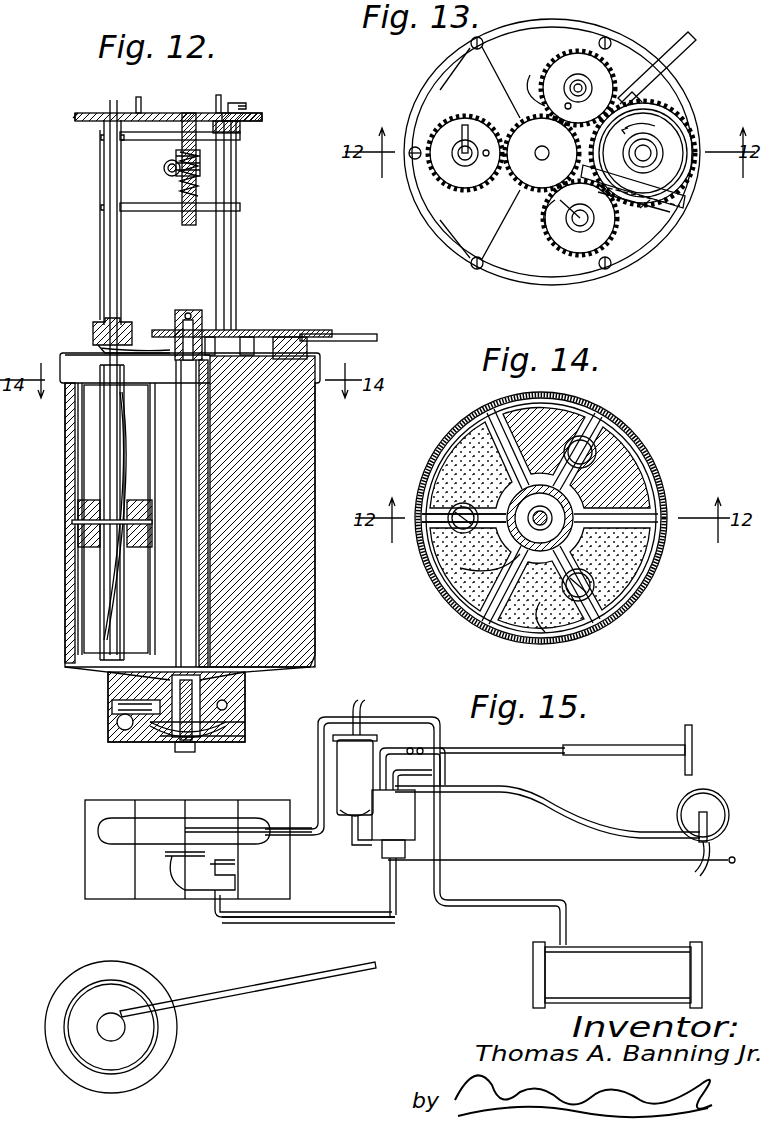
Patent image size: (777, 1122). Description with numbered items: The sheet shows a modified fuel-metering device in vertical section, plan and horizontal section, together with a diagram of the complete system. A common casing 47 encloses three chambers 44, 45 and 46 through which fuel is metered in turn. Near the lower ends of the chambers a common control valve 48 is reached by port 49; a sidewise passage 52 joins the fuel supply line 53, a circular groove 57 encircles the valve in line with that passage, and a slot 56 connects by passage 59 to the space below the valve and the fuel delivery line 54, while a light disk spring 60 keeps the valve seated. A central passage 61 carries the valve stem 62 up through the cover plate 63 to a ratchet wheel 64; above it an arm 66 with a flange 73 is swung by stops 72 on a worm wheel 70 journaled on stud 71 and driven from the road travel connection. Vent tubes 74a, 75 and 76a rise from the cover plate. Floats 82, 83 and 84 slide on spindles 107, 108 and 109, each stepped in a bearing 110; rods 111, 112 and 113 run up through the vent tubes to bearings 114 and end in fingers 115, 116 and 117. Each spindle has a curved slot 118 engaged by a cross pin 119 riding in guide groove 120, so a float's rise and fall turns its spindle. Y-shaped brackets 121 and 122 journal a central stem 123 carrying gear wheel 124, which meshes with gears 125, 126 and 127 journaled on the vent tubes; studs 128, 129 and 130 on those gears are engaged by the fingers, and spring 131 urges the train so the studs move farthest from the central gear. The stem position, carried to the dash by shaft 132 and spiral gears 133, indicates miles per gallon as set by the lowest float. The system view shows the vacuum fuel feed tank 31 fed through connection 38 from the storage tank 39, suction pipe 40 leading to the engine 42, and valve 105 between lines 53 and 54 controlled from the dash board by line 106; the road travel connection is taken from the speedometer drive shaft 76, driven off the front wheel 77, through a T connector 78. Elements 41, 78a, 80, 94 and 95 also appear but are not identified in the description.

In FIG. 15, the vacuum fuel feed tank 31 is at (355, 775).
In FIG. 15, the connection 38 is at (398, 748).
In FIG. 15, the storage tank 39 is at (617, 975).
In FIG. 15, the pipe 40 is at (312, 753).
In FIG. 15, the tube 41 is at (158, 818).
In FIG. 15, the engine 42 is at (92, 864).
In FIG. 12, the chamber 44 is at (90, 595).
In FIG. 14, the chamber 44 is at (470, 603).
In FIG. 14, the chamber 45 is at (500, 418).
In FIG. 14, the chamber 46 is at (490, 620).
In FIG. 12, the common casing 47 is at (320, 473).
In FIG. 14, the common casing 47 is at (590, 390).
In FIG. 15, the common casing 47 is at (393, 815).
In FIG. 12, the common control valve 48 is at (208, 719).
In FIG. 12, the port 49 is at (112, 691).
In FIG. 12, the passage 52 is at (110, 711).
In FIG. 15, the line 53 is at (352, 830).
In FIG. 12, the fuel delivery line 54 is at (180, 751).
In FIG. 15, the fuel delivery line 54 is at (326, 918).
In FIG. 12, the slot 56 is at (240, 697).
In FIG. 12, the circular groove 57 is at (230, 719).
In FIG. 12, the passage 59 is at (240, 713).
In FIG. 12, the disk spring 60 is at (225, 741).
In FIG. 12, the passage 61 is at (203, 539).
In FIG. 14, the passage 61 is at (555, 530).
In FIG. 12, the valve stem 62 is at (196, 561).
In FIG. 14, the valve stem 62 is at (520, 496).
In FIG. 12, the cover plate 63 is at (108, 350).
In FIG. 12, the ratchet wheel 64 is at (178, 330).
In FIG. 15, the ratchet wheel 64 is at (412, 778).
In FIG. 12, the arm 66 is at (228, 330).
In FIG. 13, the arm 66 is at (688, 199).
In FIG. 12, the worm wheel 70 is at (328, 334).
In FIG. 13, the worm wheel 70 is at (668, 140).
In FIG. 12, the stud 71 is at (290, 344).
In FIG. 13, the stud 71 is at (648, 148).
In FIG. 13, the stop 72 is at (670, 213).
In FIG. 13, the flange 73 is at (686, 203).
In FIG. 12, the vent tube 74a is at (104, 254).
In FIG. 15, the vent tube 74a is at (384, 745).
In FIG. 12, the vent tube 75 is at (236, 266).
In FIG. 15, the speedometer drive shaft 76 is at (705, 871).
In FIG. 15, the vent tube 76a is at (430, 777).
In FIG. 12, the front wheel 77 is at (93, 329).
In FIG. 15, the front wheel 77 is at (177, 1032).
In FIG. 15, the T connector 78 is at (727, 825).
In FIG. 15, the fitting 78a is at (415, 748).
In FIG. 15, the tube 80 is at (470, 748).
In FIG. 12, the float 82 is at (80, 512).
In FIG. 14, the float 82 is at (462, 570).
In FIG. 13, the float 83 is at (529, 224).
In FIG. 14, the float 83 is at (636, 478).
In FIG. 14, the float 84 is at (543, 632).
In FIG. 15, the rod 94 is at (685, 760).
In FIG. 15, the plate 95 is at (688, 725).
In FIG. 12, the valve 105 is at (130, 734).
In FIG. 15, the valve 105 is at (381, 860).
In FIG. 15, the line 106 is at (535, 853).
In FIG. 12, the central spindle 107 is at (100, 449).
In FIG. 14, the central spindle 107 is at (482, 530).
In FIG. 14, the central spindle 108 is at (600, 456).
In FIG. 14, the central spindle 109 is at (595, 586).
In FIG. 12, the step bearing 110 is at (110, 673).
In FIG. 12, the rod 111 is at (110, 269).
In FIG. 13, the rod 111 is at (455, 158).
In FIG. 13, the rod 112 is at (580, 80).
In FIG. 13, the rod 113 is at (580, 232).
In FIG. 12, the bearing 114 is at (103, 147).
In FIG. 13, the finger 115 is at (455, 140).
In FIG. 12, the finger 116 is at (240, 103).
In FIG. 13, the finger 116 is at (580, 84).
In FIG. 13, the finger 117 is at (560, 232).
In FIG. 12, the curved slot 118 is at (112, 477).
In FIG. 12, the cross pin 119 is at (78, 537).
In FIG. 14, the cross pin 119 is at (450, 512).
In FIG. 12, the guide groove 120 is at (78, 568).
In FIG. 14, the guide groove 120 is at (425, 522).
In FIG. 12, the Y shaped bracket 121 is at (240, 135).
In FIG. 12, the Y shaped bracket 122 is at (240, 208).
In FIG. 12, the central stem 123 is at (196, 149).
In FIG. 13, the central stem 123 is at (542, 153).
In FIG. 12, the gear wheel 124 is at (160, 113).
In FIG. 13, the gear wheel 124 is at (539, 162).
In FIG. 12, the gear wheel 125 is at (98, 113).
In FIG. 13, the gear wheel 125 is at (466, 124).
In FIG. 12, the gear wheel 126 is at (262, 115).
In FIG. 13, the gear wheel 126 is at (560, 60).
In FIG. 13, the gear wheel 127 is at (640, 209).
In FIG. 12, the stud 128 is at (138, 97).
In FIG. 13, the stud 128 is at (486, 158).
In FIG. 12, the stud 129 is at (218, 95).
In FIG. 13, the stud 129 is at (537, 80).
In FIG. 13, the stud 130 is at (590, 226).
In FIG. 12, the spring 131 is at (198, 189).
In FIG. 12, the shaft 132 is at (164, 166).
In FIG. 12, the spiral gears 133 is at (200, 164).